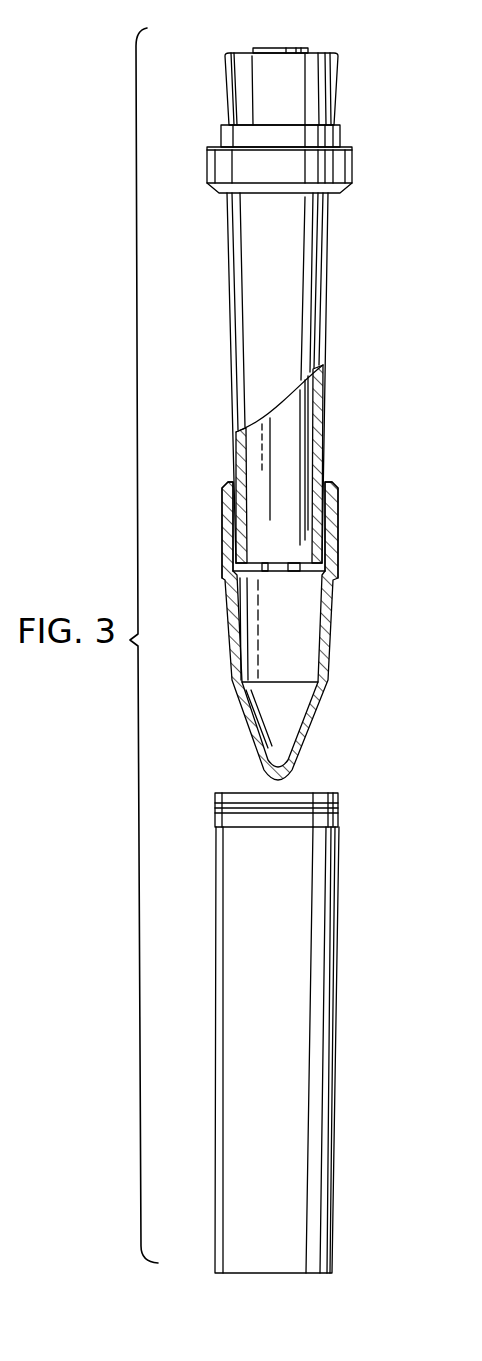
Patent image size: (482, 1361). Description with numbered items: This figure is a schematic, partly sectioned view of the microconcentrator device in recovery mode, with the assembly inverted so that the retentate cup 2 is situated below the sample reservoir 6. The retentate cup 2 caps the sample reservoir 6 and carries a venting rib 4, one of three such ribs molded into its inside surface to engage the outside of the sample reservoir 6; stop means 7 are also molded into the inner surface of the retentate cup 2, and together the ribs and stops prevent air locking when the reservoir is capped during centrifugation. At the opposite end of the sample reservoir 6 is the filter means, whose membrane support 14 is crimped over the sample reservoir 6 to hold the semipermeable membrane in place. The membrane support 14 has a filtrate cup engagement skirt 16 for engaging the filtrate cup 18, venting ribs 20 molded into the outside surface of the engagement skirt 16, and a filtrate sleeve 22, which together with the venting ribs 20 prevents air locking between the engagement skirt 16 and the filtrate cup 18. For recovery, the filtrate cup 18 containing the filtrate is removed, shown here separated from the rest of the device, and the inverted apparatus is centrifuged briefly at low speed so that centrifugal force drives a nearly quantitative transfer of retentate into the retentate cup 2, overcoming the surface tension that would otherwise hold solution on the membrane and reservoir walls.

The retentate cup 2 is at (307, 617).
The venting rib 4 is at (327, 512).
The sample reservoir 6 is at (312, 276).
The stop means 7 is at (262, 567).
The membrane support 14 is at (327, 137).
The filtrate cup engagement skirt 16 is at (318, 72).
The filtrate cup 18 is at (322, 980).
The venting ribs 20 is at (305, 90).
The filtrate sleeve 22 is at (297, 48).